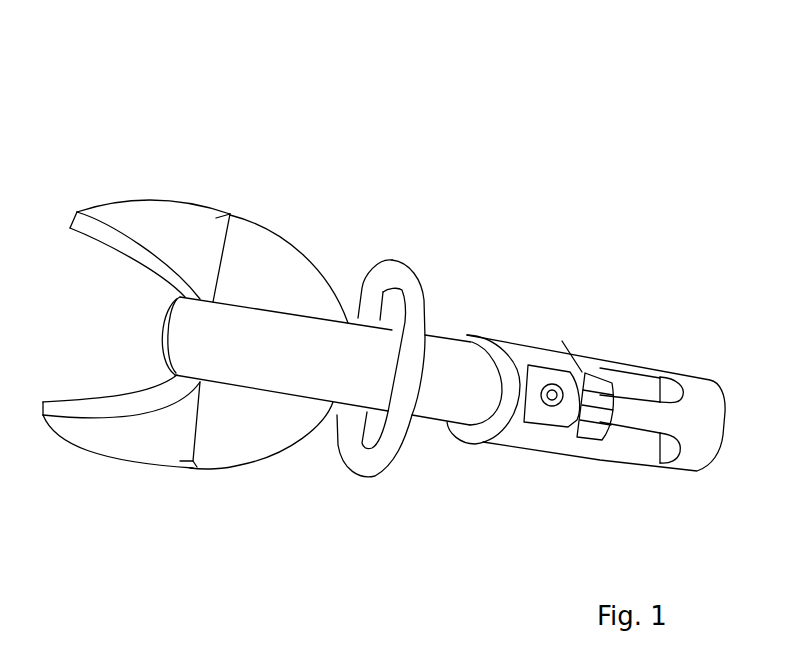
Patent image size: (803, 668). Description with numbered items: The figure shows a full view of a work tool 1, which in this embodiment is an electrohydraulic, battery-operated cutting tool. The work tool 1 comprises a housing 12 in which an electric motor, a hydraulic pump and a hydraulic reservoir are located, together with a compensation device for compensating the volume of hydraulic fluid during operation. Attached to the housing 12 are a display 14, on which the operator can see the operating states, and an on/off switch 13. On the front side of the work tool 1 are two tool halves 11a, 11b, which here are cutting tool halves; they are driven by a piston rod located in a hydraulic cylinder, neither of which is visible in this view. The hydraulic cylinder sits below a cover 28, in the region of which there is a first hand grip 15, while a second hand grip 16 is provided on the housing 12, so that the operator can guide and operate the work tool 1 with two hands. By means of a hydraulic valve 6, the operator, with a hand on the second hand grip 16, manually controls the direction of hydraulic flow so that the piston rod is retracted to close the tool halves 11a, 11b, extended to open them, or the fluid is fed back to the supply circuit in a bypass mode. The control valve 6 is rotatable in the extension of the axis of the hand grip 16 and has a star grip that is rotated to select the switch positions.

The work tool 1 is at (440, 153).
The tool half 11a is at (125, 218).
The tool half 11b is at (114, 438).
The first hand grip 15 is at (378, 283).
The cover 28 is at (430, 350).
The housing 12 is at (523, 441).
The display 14 is at (547, 373).
The on/off switch 13 is at (552, 396).
The hydraulic valve 6 is at (603, 364).
The second hand grip 16 is at (650, 408).